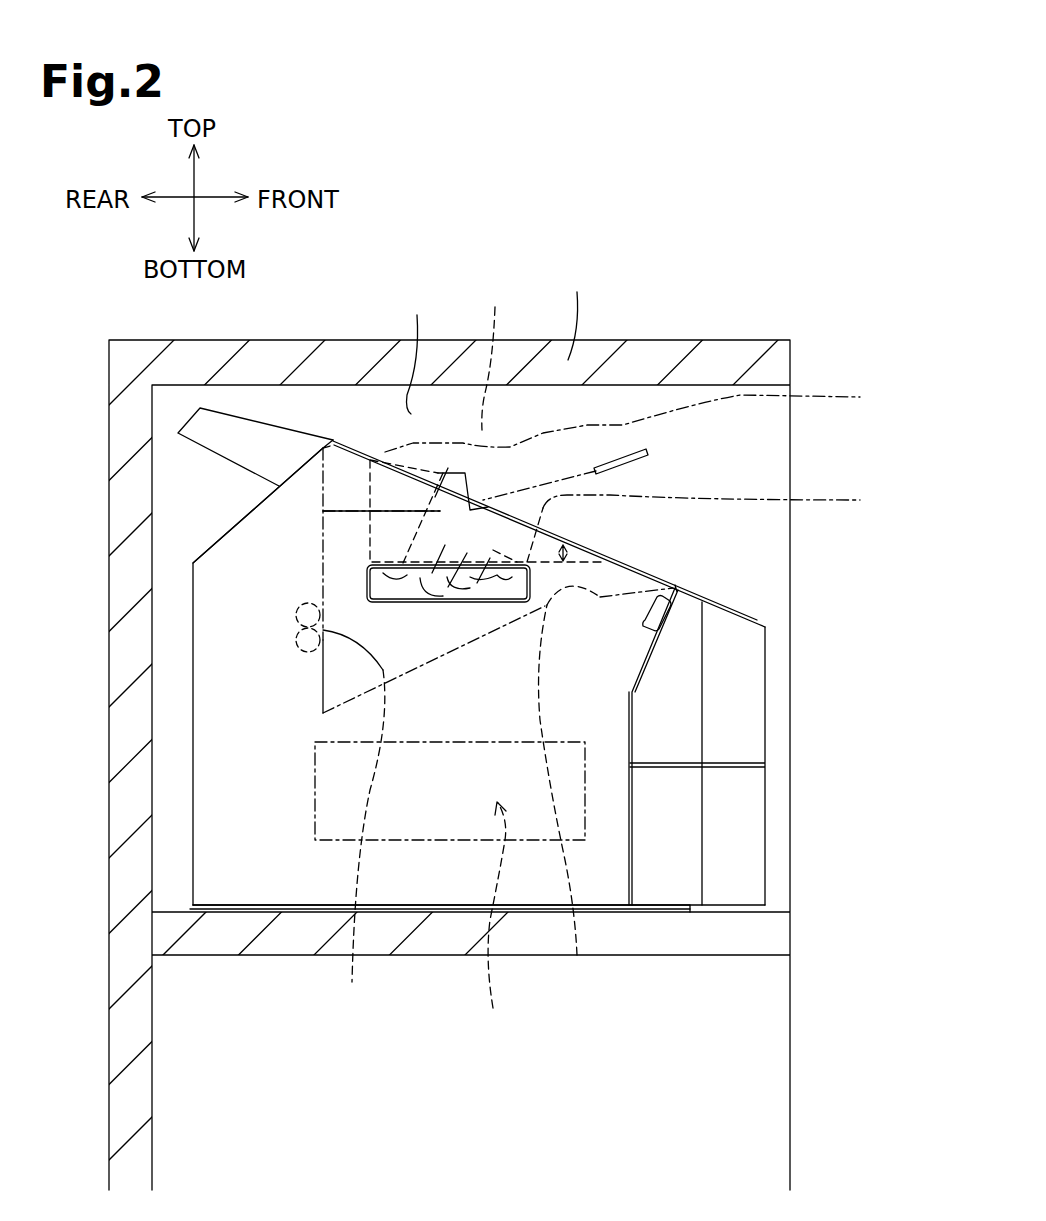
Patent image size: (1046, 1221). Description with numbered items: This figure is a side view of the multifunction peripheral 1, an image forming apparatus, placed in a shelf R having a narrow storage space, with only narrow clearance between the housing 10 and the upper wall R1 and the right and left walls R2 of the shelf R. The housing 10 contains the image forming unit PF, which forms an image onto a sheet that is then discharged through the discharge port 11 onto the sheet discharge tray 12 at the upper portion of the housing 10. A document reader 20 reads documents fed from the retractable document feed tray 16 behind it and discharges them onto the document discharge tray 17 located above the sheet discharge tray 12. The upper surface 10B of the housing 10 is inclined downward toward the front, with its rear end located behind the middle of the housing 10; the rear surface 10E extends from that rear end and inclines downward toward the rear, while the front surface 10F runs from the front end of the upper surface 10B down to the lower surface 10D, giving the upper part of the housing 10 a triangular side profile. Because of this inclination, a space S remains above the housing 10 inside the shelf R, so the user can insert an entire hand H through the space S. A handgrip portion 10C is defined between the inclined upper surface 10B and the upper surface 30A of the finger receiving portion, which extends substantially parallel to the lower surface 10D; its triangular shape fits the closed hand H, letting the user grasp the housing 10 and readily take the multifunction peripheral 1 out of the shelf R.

The multifunction peripheral 1 is at (335, 412).
The housing 10 is at (210, 542).
The upper surface 10B is at (638, 567).
The handgrip portion 10C is at (503, 528).
The lower surface 10D is at (203, 908).
The rear surface 10E is at (252, 508).
The front surface 10F is at (767, 670).
The discharge port 11 is at (450, 820).
The sheet discharge tray 12 is at (577, 955).
The document feed tray 16 is at (268, 432).
The document discharge tray 17 is at (628, 455).
The document reader 20 is at (368, 458).
The upper surface of finger receiving portion 30A is at (368, 580).
The hand H is at (494, 355).
The shelf R is at (657, 341).
The upper wall R1 is at (579, 313).
The right and left walls R2 is at (419, 351).
The space S is at (610, 421).
The image forming unit PF is at (501, 922).